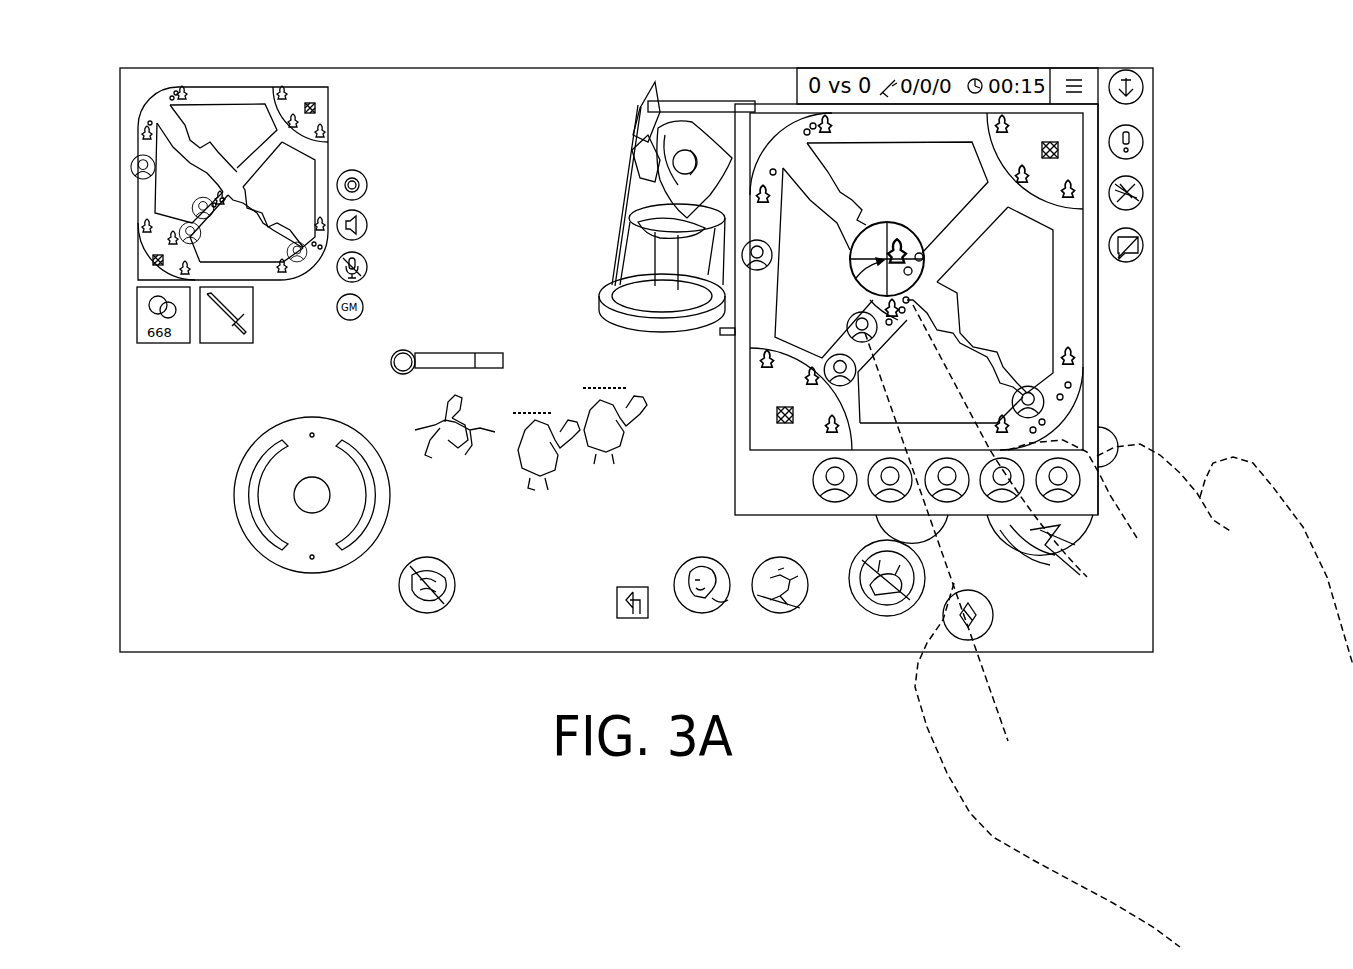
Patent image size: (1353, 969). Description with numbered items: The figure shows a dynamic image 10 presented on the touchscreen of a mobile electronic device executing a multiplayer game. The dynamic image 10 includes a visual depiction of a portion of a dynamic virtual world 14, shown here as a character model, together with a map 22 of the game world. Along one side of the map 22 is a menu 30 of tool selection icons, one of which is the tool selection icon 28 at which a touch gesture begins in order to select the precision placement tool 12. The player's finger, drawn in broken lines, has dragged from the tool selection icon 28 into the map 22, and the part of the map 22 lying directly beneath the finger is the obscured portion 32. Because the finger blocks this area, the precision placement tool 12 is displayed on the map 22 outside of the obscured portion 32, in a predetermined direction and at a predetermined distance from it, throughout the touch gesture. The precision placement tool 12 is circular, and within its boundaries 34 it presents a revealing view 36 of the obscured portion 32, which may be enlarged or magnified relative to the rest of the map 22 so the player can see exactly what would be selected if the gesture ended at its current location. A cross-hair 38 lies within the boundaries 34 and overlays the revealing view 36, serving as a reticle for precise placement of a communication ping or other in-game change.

The dynamic image 10 is at (217, 713).
The precision placement tool 12 is at (907, 222).
The dynamic virtual world 14 is at (583, 138).
The map 22 is at (912, 274).
The tool selection icon 28 is at (1125, 244).
The menu 30 is at (1155, 292).
The obscured portion 32 is at (868, 299).
The boundaries 34 is at (881, 219).
The revealing view 36 is at (929, 283).
The cross-hair 38 is at (862, 273).